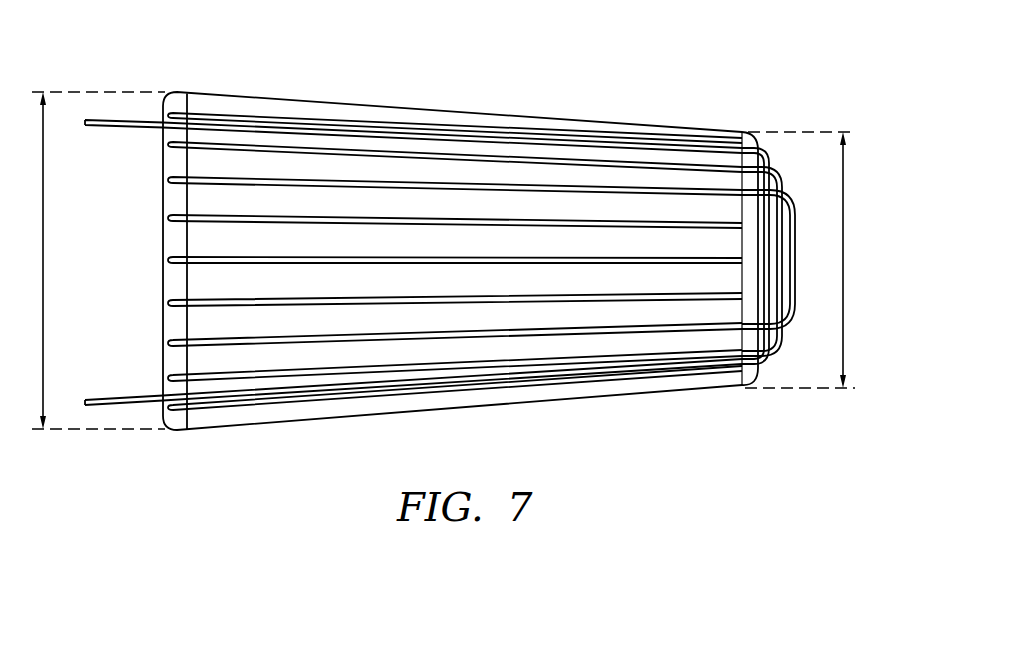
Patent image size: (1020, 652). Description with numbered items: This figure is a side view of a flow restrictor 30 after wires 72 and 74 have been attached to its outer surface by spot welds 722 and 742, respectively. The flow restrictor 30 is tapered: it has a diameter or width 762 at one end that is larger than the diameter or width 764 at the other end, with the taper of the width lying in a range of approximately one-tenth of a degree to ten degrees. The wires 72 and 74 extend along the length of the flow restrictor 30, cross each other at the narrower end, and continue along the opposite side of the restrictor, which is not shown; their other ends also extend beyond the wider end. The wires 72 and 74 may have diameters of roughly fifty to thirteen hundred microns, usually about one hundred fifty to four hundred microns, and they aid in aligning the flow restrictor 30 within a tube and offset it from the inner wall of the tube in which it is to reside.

The flow restrictor 30 is at (576, 55).
The wire 72 is at (107, 128).
The spot welds 722 is at (227, 128).
The wire 74 is at (107, 395).
The spot welds 742 is at (227, 392).
The diameter (width) 762 is at (47, 252).
The diameter (width) 764 is at (847, 252).